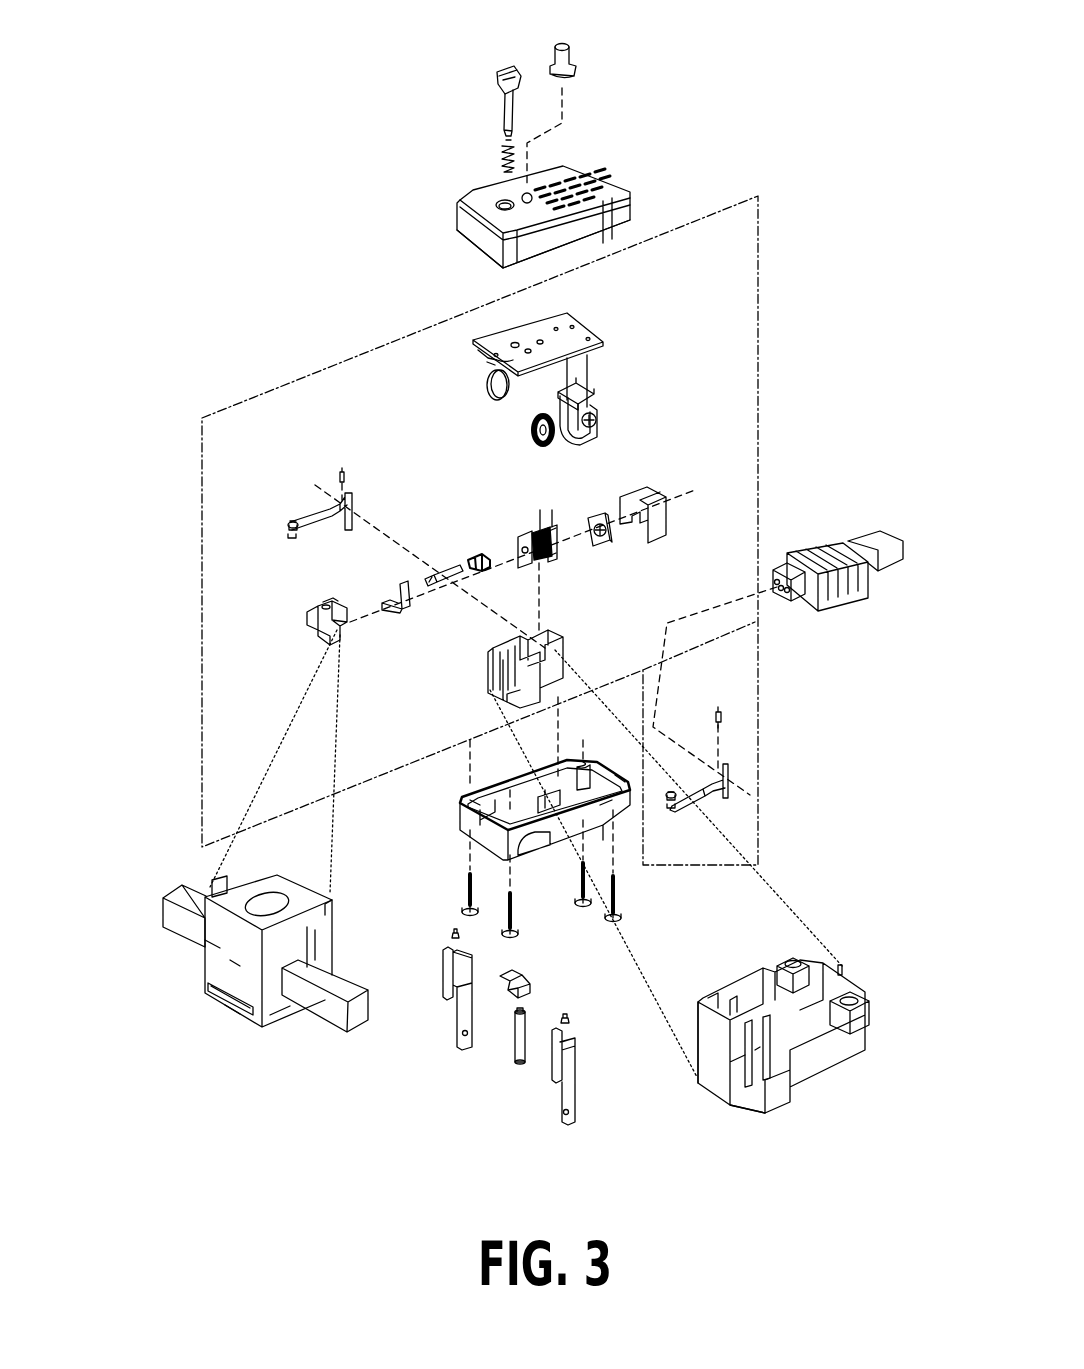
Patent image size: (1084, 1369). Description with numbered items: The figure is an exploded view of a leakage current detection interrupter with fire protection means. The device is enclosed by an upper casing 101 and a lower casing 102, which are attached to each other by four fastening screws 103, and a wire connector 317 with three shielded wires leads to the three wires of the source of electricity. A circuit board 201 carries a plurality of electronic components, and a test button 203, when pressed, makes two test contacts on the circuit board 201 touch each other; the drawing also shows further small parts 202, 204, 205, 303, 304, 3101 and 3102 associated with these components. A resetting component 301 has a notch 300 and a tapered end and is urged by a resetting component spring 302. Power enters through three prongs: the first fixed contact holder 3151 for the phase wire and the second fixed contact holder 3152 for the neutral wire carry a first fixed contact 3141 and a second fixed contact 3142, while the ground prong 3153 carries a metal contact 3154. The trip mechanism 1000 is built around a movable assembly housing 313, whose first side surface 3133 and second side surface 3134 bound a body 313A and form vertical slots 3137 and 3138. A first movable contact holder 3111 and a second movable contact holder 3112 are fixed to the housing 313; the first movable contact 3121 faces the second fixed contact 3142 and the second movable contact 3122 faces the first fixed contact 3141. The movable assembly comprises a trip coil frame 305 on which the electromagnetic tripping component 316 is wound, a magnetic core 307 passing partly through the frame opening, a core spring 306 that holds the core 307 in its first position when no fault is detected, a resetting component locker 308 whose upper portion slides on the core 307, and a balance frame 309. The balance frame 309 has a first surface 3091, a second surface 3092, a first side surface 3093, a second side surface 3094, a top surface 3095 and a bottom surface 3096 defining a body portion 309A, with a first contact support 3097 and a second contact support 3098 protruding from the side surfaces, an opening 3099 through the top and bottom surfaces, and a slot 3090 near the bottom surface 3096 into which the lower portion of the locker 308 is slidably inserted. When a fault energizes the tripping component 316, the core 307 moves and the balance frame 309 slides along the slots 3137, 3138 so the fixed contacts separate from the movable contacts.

The trip mechanism 1000 is at (760, 338).
The upper casing 101 is at (620, 213).
The lower casing 102 is at (480, 832).
The fastening screws 103 is at (613, 913).
The circuit board 201 is at (576, 330).
The clamp 202 is at (593, 417).
The test button 203 is at (572, 53).
The washer 204 is at (537, 443).
The bracket 205 is at (587, 387).
The notch 300 is at (503, 123).
The resetting component 301 is at (500, 82).
The resetting component spring 302 is at (502, 147).
The U-shaped bracket 303 is at (655, 517).
The washer plate 304 is at (600, 542).
The trip coil frame 305 is at (555, 550).
The core spring 306 is at (478, 558).
The magnetic core 307 is at (447, 570).
The resetting component locker 308 is at (398, 612).
The balance frame 309 is at (323, 605).
The body portion 309A is at (218, 949).
The slot 3090 is at (250, 1010).
The first surface 3091 is at (218, 968).
The second surface 3092 is at (313, 900).
The first side surface 3093 is at (280, 1012).
The second side surface 3094 is at (203, 962).
The top surface 3095 is at (293, 900).
The bottom surface 3096 is at (232, 1012).
The first contact support 3097 is at (357, 1015).
The second contact support 3098 is at (177, 917).
The opening 3099 is at (267, 902).
The screw 3101 is at (722, 717).
The screw 3102 is at (338, 470).
The first movable contact holder 3111 is at (698, 795).
The second movable contact holder 3112 is at (318, 522).
The first movable contact 3121 is at (673, 807).
The second movable contact 3122 is at (290, 532).
The movable assembly housing 313 is at (493, 677).
The body 313A is at (714, 1085).
The first side surface 3133 is at (743, 1093).
The second side surface 3134 is at (698, 1027).
The vertical slot 3137 is at (758, 1048).
The vertical slot 3138 is at (722, 1002).
The first fixed contact 3141 is at (453, 930).
The second fixed contact 3142 is at (568, 1018).
The first fixed contact holder 3151 is at (443, 980).
The second fixed contact holder 3152 is at (567, 1102).
The ground prong 3153 is at (515, 1050).
The metal contact 3154 is at (517, 993).
The electromagnetic tripping component 316 is at (540, 527).
The wire connector 317 is at (820, 553).